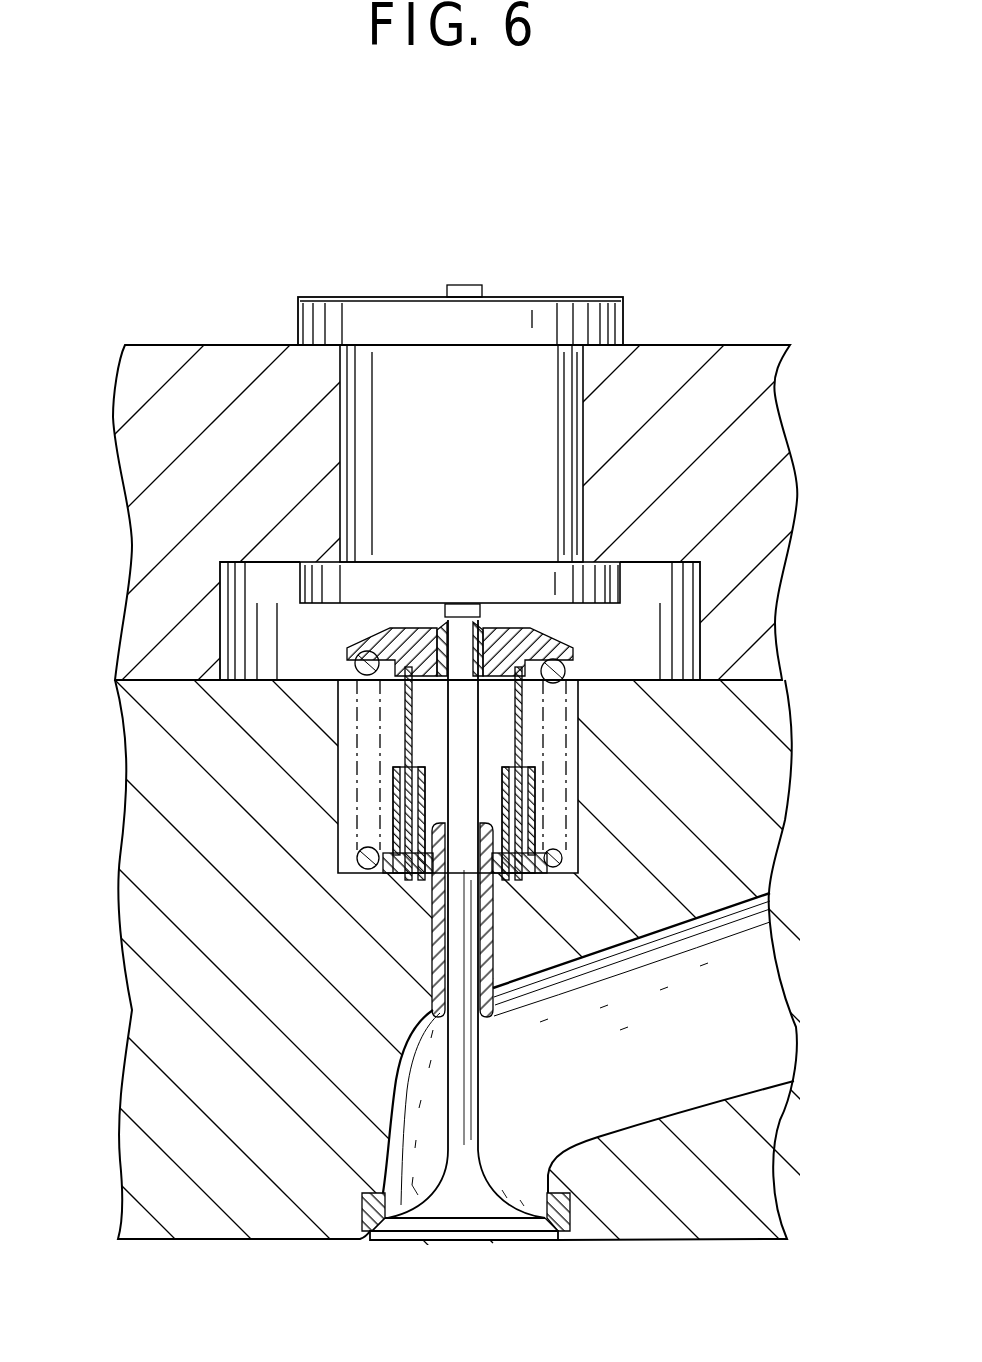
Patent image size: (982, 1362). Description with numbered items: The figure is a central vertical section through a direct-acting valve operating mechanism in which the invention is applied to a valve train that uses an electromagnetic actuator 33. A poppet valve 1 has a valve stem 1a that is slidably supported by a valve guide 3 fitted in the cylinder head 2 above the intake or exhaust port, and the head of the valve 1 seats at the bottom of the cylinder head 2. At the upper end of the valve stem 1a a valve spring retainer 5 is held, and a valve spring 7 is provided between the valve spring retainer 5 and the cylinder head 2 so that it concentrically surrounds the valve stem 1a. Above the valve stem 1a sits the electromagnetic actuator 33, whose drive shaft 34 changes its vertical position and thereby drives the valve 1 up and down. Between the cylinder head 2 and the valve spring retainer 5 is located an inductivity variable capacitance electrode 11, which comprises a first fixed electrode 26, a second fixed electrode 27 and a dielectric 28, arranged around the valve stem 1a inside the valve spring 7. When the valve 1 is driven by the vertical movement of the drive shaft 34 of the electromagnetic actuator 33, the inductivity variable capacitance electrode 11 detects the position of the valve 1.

The poppet valve 1 is at (488, 930).
The valve stem 1a is at (483, 1112).
The cylinder head 2 is at (270, 1226).
The valve guide 3 is at (432, 957).
The valve spring retainer 5 is at (380, 648).
The valve spring 7 is at (372, 685).
The inductivity variable capacitance electrode 11 is at (280, 804).
The first fixed electrode 26 is at (428, 826).
The second fixed electrode 27 is at (405, 855).
The dielectric 28 is at (386, 783).
The electromagnetic actuator 33 is at (580, 297).
The drive shaft 34 is at (467, 285).